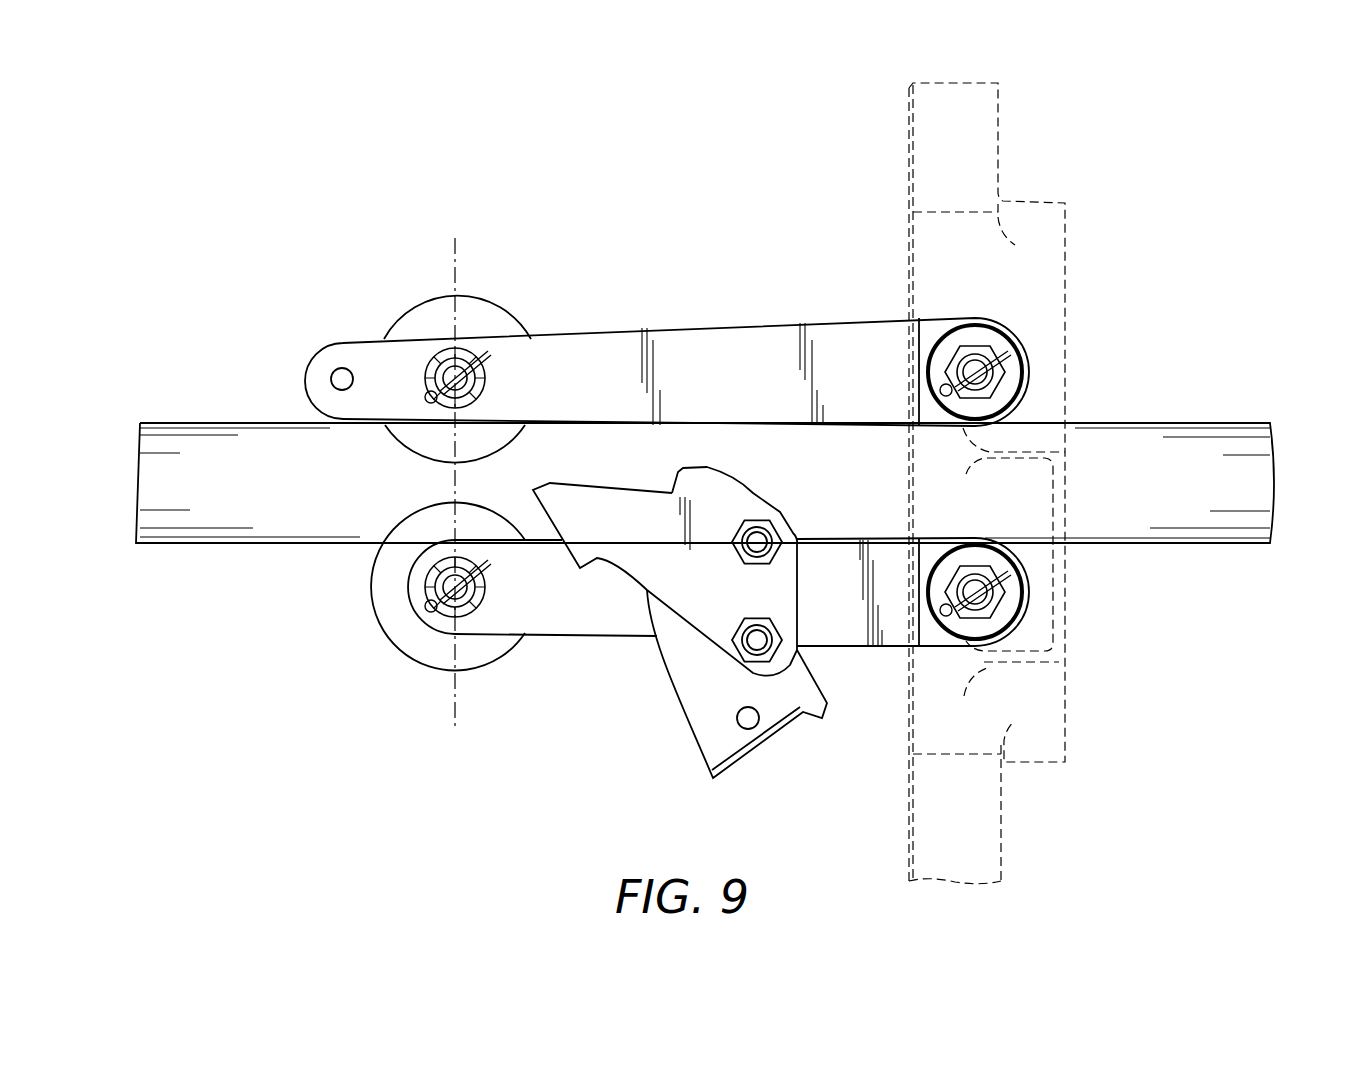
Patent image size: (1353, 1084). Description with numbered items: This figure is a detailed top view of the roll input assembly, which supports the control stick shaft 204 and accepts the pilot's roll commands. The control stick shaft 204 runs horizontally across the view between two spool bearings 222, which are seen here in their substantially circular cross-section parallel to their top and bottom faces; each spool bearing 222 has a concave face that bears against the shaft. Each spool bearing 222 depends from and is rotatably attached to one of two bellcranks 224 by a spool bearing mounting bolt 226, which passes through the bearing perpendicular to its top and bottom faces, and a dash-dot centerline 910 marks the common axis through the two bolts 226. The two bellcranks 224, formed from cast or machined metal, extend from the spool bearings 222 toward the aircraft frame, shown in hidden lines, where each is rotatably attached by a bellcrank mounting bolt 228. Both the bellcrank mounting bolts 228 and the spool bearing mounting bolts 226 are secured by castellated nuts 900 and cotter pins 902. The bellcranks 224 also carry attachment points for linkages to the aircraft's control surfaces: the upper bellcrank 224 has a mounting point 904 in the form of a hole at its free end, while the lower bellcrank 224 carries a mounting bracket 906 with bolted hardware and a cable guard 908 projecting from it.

The control stick shaft 204 is at (1192, 448).
The spool bearing 222 is at (472, 303).
The bellcrank 224 is at (702, 345).
The spool bearing mounting bolt 226 is at (440, 355).
The bellcrank mounting bolt 228 is at (998, 380).
The castellated nut 900 is at (477, 387).
The cotter pin 902 is at (493, 355).
The mounting point 904 is at (330, 380).
The mounting bracket 906 is at (690, 697).
The cable guard 908 is at (690, 607).
The centerline 910 is at (452, 257).